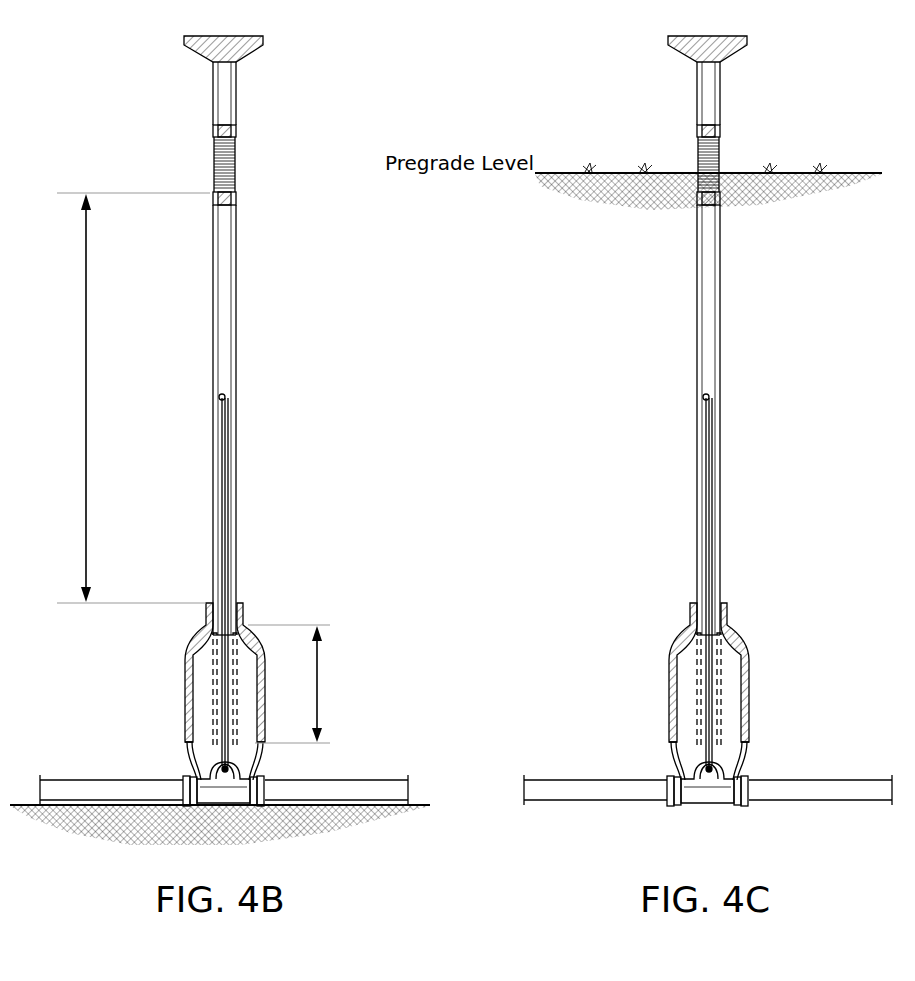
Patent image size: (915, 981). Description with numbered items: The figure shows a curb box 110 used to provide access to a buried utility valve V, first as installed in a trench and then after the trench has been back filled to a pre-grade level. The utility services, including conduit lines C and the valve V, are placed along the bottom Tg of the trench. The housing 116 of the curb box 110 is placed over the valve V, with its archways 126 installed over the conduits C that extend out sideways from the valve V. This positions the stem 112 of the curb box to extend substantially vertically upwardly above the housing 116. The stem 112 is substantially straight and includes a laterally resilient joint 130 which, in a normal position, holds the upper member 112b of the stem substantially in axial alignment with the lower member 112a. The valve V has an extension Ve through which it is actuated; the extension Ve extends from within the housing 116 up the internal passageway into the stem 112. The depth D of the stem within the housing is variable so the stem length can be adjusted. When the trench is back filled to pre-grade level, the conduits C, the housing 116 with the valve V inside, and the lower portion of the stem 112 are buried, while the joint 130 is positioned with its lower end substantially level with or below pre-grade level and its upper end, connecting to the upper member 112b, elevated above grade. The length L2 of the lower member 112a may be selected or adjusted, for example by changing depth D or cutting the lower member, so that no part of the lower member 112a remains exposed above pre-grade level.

In FIG. 4B, the curb box 110 is at (223, 335).
In FIG. 4B, the stem 112 is at (223, 335).
In FIG. 4C, the stem 112 is at (695, 335).
In FIG. 4B, the lower member 112a is at (213, 328).
In FIG. 4B, the upper member 112b is at (235, 80).
In FIG. 4B, the housing 116 is at (185, 672).
In FIG. 4C, the housing 116 is at (658, 691).
In FIG. 4B, the archways 126 is at (268, 766).
In FIG. 4B, the laterally resilient joint 130 is at (213, 162).
In FIG. 4C, the laterally resilient joint 130 is at (649, 158).
In FIG. 4B, the conduit lines C is at (70, 790).
In FIG. 4C, the conduit lines C is at (708, 782).
In FIG. 4B, the valve V is at (215, 788).
In FIG. 4C, the valve V is at (681, 764).
In FIG. 4B, the trench bottom Tg is at (425, 806).
In FIG. 4B, the valve extension Ve is at (228, 543).
In FIG. 4B, the length of lower member L2 is at (133, 398).
In FIG. 4B, the depth D is at (289, 684).